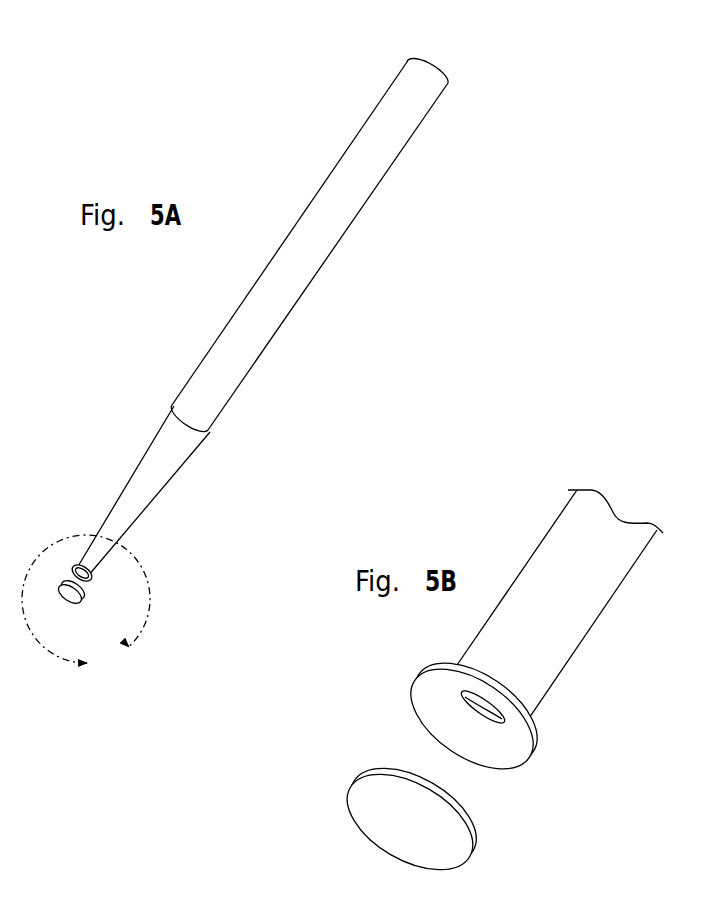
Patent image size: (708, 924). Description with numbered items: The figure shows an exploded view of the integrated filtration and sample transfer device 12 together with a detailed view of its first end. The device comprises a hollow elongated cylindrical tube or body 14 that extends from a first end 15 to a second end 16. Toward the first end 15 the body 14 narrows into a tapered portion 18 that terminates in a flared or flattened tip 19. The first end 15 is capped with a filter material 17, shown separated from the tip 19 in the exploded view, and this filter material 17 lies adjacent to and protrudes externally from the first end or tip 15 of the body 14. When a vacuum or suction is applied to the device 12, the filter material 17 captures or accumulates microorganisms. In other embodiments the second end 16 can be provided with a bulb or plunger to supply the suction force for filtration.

In FIG. 5A, the integrated filtration and sample transfer device 12 is at (303, 128).
In FIG. 5A, the hollow elongated cylindrical tube or body 14 is at (315, 252).
In FIG. 5A, the second end 16 is at (430, 63).
In FIG. 5A, the tapered portion 18 is at (170, 462).
In FIG. 5A, the first end 15 is at (98, 594).
In FIG. 5B, the first end 15 is at (528, 783).
In FIG. 5A, the filter material 17 is at (67, 601).
In FIG. 5B, the filter material 17 is at (397, 846).
In FIG. 5B, the flared or flattened tip 19 is at (432, 718).